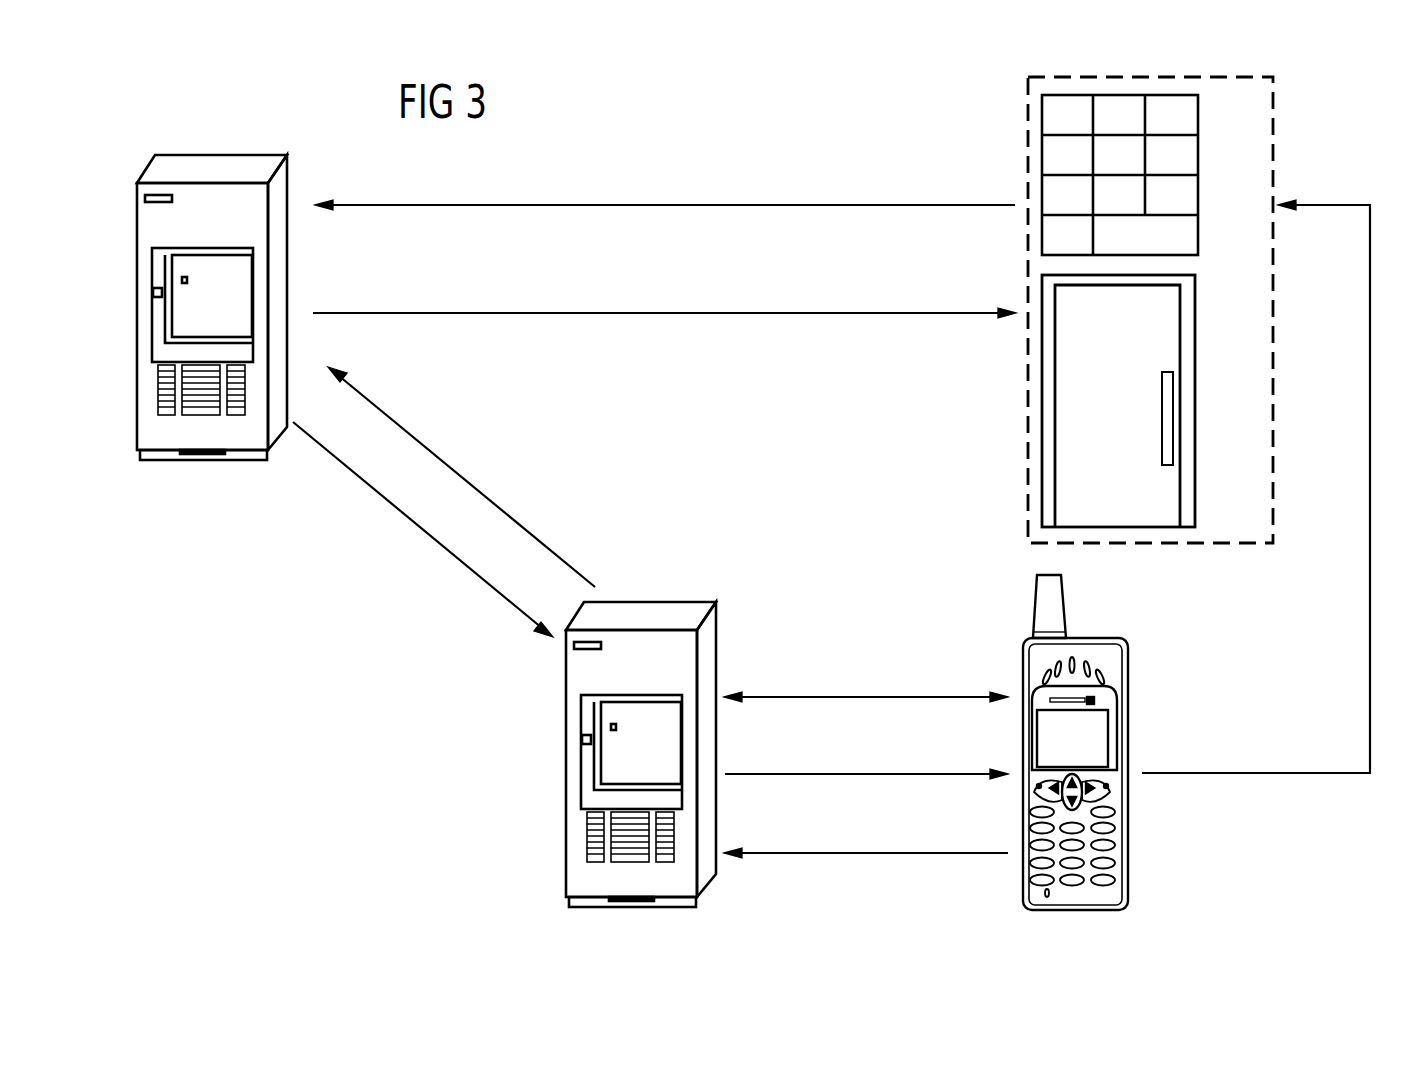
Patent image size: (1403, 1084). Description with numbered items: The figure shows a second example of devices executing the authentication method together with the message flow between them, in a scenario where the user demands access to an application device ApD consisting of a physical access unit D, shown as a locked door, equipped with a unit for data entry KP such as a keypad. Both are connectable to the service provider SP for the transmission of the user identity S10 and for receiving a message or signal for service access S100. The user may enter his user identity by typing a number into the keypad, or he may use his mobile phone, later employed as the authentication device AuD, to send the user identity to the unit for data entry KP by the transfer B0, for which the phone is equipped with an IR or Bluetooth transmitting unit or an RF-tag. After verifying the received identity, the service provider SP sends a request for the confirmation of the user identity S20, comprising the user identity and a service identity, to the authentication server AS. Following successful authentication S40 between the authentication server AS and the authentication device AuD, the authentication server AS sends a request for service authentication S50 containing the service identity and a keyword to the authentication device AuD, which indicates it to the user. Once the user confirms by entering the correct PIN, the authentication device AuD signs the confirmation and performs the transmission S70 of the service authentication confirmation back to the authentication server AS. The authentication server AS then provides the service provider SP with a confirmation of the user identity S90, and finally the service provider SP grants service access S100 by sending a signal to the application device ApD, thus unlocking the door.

The service provider SP is at (200, 462).
The authentication server AS is at (566, 778).
The application device ApD is at (1213, 545).
The unit for data entry KP is at (1198, 160).
The physical access unit D is at (1195, 412).
The authentication device AuD is at (1128, 826).
The transmission of the user identity S10 is at (822, 202).
The request for the confirmation of the user identity S20 is at (408, 520).
The authentication S40 is at (816, 696).
The request for service authentication S50 is at (853, 772).
The transmission of the service authentication confirmation S70 is at (900, 851).
The confirmation of the user identity S90 is at (445, 460).
The service access S100 is at (762, 310).
The transfer of the user identity B0 is at (1194, 772).